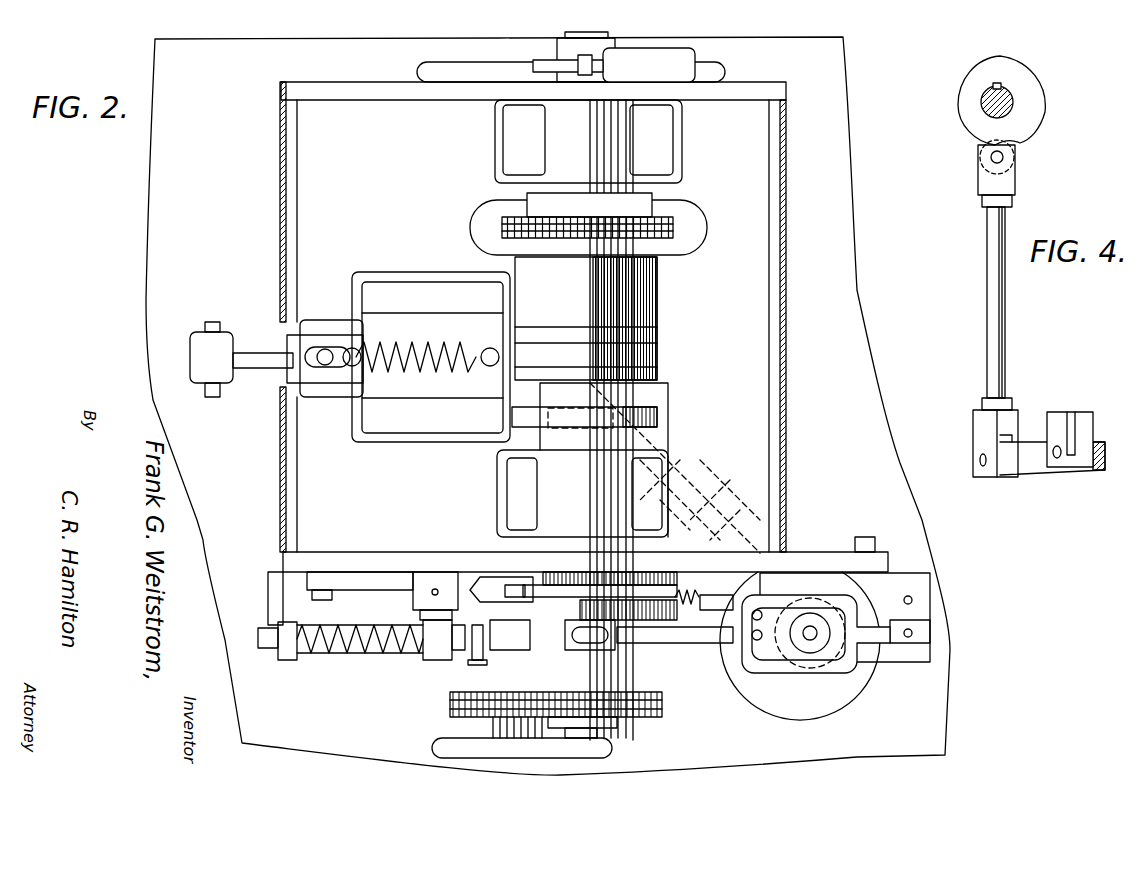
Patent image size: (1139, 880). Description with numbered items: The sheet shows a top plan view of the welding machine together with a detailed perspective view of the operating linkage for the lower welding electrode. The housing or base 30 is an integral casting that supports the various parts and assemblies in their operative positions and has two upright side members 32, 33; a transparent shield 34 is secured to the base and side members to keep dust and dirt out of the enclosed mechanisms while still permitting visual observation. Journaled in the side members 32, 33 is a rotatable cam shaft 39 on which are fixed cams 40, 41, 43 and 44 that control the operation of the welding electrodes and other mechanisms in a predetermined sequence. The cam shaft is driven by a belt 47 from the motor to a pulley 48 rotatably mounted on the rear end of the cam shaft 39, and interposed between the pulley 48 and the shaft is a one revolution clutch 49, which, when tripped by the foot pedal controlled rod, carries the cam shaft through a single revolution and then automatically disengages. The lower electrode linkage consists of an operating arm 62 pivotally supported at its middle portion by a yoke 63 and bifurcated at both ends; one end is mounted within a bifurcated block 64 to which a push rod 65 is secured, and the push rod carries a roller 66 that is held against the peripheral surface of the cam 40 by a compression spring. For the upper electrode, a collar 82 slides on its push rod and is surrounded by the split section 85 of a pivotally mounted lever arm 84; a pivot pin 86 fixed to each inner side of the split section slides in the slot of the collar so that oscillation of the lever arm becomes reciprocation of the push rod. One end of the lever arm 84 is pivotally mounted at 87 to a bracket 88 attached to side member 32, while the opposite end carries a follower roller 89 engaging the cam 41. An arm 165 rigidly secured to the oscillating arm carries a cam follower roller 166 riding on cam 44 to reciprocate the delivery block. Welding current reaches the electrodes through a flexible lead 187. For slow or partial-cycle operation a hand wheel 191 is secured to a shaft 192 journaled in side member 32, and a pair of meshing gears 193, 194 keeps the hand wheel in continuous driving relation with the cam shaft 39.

In FIG. 2, the housing or base 30 is at (293, 148).
In FIG. 2, the upright side member 32 is at (308, 560).
In FIG. 2, the upright side member 33 is at (350, 92).
In FIG. 2, the shield 34 is at (282, 178).
In FIG. 2, the cam shaft 39 is at (622, 397).
In FIG. 2, the cam 40 is at (657, 413).
In FIG. 4, the cam 40 is at (1030, 104).
In FIG. 2, the cam 41 is at (545, 642).
In FIG. 2, the cam 43 is at (630, 612).
In FIG. 2, the cam 44 is at (575, 590).
In FIG. 2, the belt 47 is at (502, 228).
In FIG. 2, the pulley 48 is at (665, 215).
In FIG. 2, the one revolution clutch 49 is at (637, 293).
In FIG. 4, the operating arm 62 is at (1090, 460).
In FIG. 4, the yoke 63 is at (1072, 415).
In FIG. 4, the bifurcated block 64 is at (988, 468).
In FIG. 4, the push rod 65 is at (990, 285).
In FIG. 2, the roller 66 is at (582, 382).
In FIG. 4, the roller 66 is at (985, 154).
In FIG. 2, the collar 82 is at (825, 665).
In FIG. 2, the lever arm 84 is at (690, 635).
In FIG. 2, the split section 85 is at (855, 658).
In FIG. 2, the pivot pin 86 is at (818, 600).
In FIG. 2, the pivot 87 is at (915, 633).
In FIG. 2, the bracket 88 is at (920, 585).
In FIG. 2, the follower roller 89 is at (572, 636).
In FIG. 2, the arm 165 is at (500, 587).
In FIG. 2, the cam follower roller 166 is at (510, 590).
In FIG. 2, the flexible lead 187 is at (665, 58).
In FIG. 2, the hand wheel 191 is at (445, 746).
In FIG. 2, the shaft 192 is at (515, 660).
In FIG. 2, the gear 193 is at (460, 704).
In FIG. 2, the gear 194 is at (635, 719).